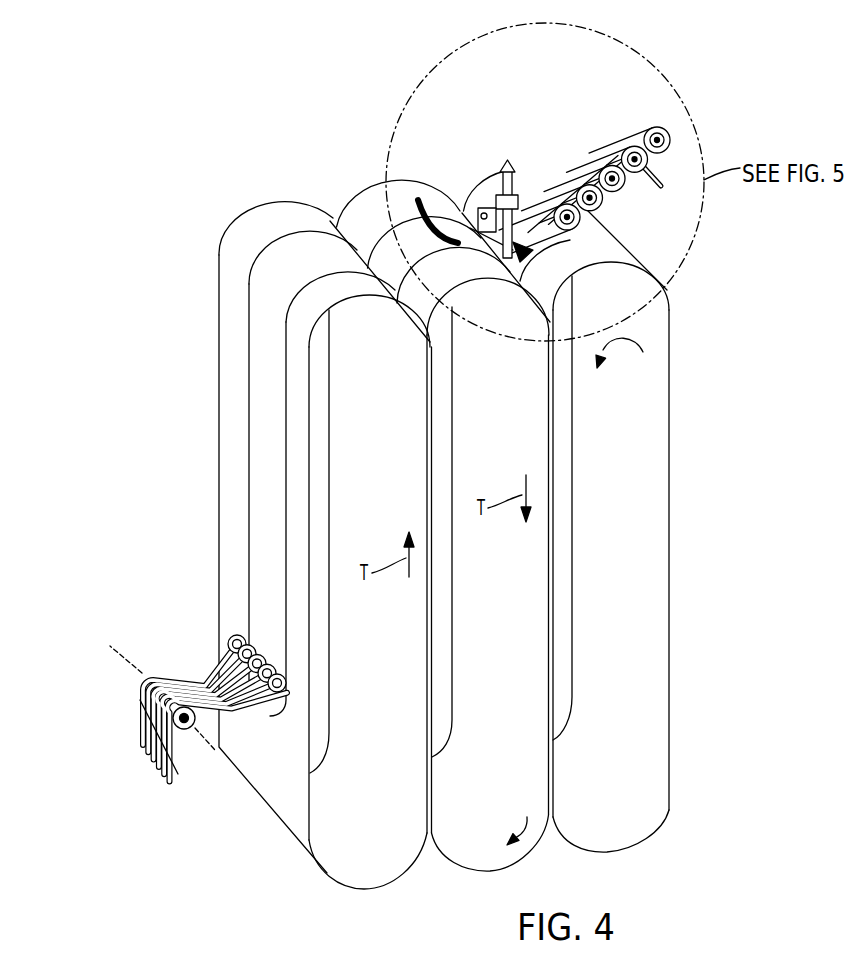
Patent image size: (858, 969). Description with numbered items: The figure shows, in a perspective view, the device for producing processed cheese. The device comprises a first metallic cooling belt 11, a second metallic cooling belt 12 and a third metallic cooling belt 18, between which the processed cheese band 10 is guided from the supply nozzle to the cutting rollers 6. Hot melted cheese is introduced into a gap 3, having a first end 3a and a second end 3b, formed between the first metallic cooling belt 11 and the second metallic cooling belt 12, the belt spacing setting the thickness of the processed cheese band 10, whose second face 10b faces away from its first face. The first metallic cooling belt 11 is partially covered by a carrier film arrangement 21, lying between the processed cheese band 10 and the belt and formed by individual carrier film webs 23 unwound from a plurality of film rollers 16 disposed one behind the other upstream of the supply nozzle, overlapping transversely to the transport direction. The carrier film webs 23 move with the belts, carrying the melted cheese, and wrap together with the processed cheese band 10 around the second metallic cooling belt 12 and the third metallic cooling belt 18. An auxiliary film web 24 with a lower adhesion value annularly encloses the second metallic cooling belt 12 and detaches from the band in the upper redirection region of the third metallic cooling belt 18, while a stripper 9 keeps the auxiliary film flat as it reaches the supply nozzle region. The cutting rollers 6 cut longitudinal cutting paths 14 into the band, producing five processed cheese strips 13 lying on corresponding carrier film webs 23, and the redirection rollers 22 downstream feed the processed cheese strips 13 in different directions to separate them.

The gap 3 is at (547, 271).
The first end of gap 3a is at (528, 325).
The second end of gap 3b is at (569, 802).
The cutting rollers 6 is at (222, 620).
The stripper 9 is at (426, 196).
The processed cheese band 10 is at (247, 528).
The second face of processed cheese band 10b is at (247, 410).
The first metallic cooling belt 11 is at (684, 815).
The second metallic cooling belt 12 is at (447, 858).
The processed cheese strip 13 is at (173, 660).
The longitudinal cutting path 14 is at (202, 678).
The film roller 16 is at (571, 120).
The third metallic cooling belt 18 is at (327, 867).
The carrier film arrangement 21 is at (480, 152).
The redirection roller 22 is at (126, 692).
The carrier film web 23 is at (163, 777).
The auxiliary film web 24 is at (425, 318).